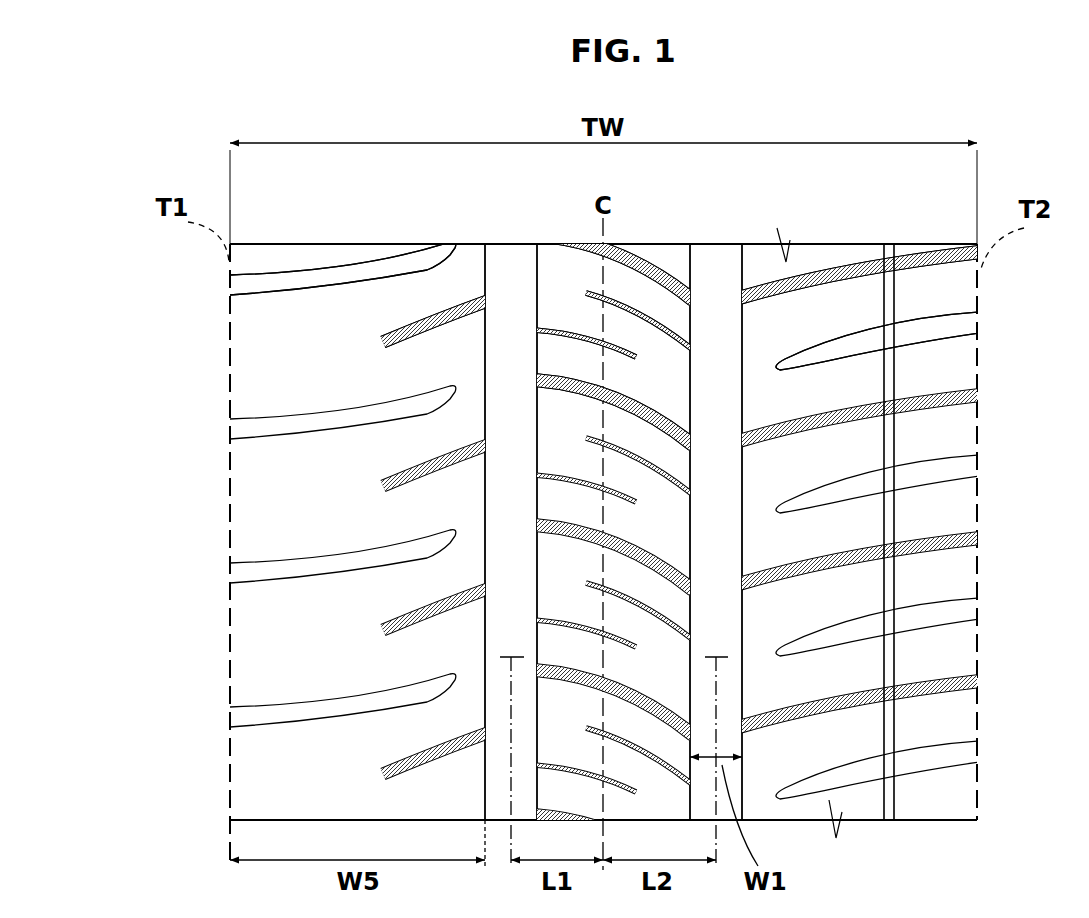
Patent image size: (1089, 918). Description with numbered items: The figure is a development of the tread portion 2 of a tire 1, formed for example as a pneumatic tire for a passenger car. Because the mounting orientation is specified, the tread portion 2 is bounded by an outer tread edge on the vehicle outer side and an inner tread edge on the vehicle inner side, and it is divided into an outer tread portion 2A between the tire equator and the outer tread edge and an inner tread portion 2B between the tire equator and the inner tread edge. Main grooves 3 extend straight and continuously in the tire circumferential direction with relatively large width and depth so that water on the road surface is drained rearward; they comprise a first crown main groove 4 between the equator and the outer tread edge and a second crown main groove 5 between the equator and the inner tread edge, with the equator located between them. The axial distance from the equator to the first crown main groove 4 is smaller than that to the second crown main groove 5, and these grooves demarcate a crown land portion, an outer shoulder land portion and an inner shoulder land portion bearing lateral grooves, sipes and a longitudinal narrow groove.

The tire 1 is at (759, 242).
The tread portion 2 is at (601, 517).
The outer tread portion 2A is at (321, 477).
The inner tread portion 2B is at (894, 500).
The main groove 3 is at (604, 500).
The first crown main groove 4 is at (510, 287).
The second crown main groove 5 is at (718, 289).